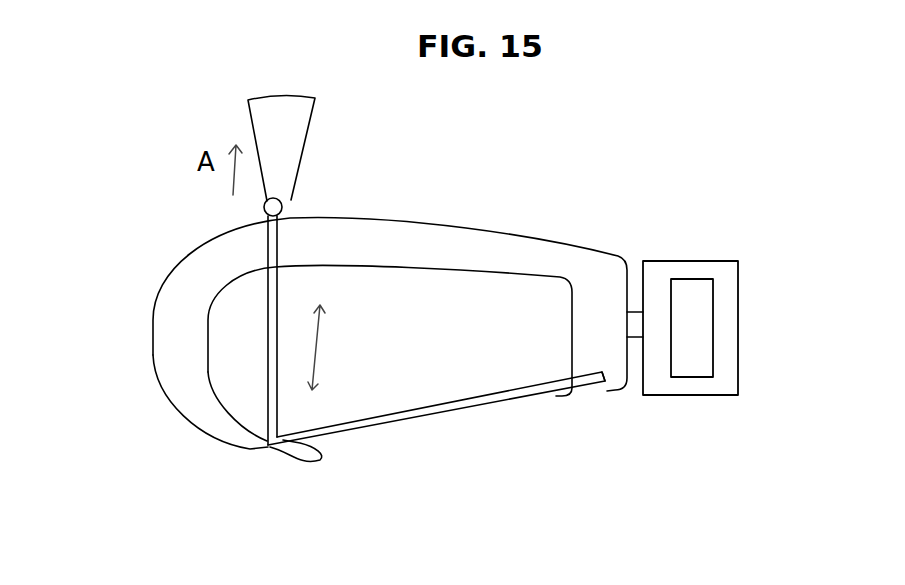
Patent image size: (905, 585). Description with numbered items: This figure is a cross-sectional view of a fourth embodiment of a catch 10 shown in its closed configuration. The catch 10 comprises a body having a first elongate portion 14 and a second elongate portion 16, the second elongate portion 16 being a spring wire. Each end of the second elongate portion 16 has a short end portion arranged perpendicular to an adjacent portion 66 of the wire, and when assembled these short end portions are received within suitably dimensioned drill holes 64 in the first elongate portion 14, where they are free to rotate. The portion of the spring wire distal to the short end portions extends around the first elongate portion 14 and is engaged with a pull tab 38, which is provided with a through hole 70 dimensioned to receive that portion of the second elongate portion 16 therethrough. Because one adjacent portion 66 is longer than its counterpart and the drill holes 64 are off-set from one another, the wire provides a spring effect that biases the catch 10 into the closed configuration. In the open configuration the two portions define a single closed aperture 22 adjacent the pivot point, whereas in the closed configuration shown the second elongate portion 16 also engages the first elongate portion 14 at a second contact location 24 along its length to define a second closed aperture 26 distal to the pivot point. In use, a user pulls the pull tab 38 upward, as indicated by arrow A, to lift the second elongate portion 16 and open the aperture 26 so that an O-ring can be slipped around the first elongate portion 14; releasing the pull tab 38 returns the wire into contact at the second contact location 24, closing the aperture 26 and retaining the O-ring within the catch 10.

The catch 10 is at (607, 175).
The first elongate portion 14 is at (173, 283).
The second elongate portion 16 is at (411, 465).
The single closed aperture 22 is at (485, 325).
The second contact location 24 is at (262, 443).
The second closed aperture 26 is at (240, 355).
The pull tab 38 is at (276, 122).
The drill holes 64 is at (602, 372).
The adjacent portion of second elongate portion 66 is at (470, 403).
The through hole 70 is at (279, 208).